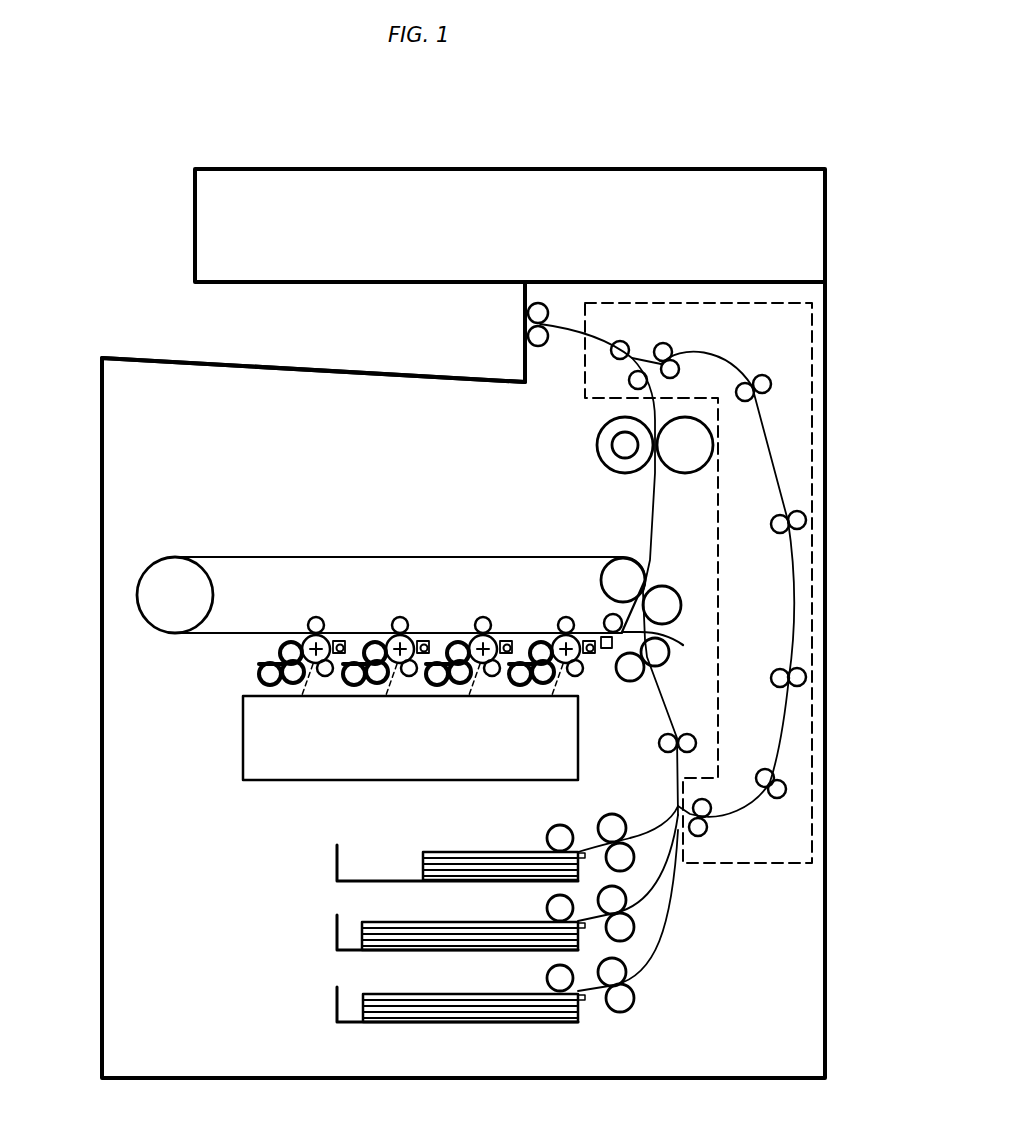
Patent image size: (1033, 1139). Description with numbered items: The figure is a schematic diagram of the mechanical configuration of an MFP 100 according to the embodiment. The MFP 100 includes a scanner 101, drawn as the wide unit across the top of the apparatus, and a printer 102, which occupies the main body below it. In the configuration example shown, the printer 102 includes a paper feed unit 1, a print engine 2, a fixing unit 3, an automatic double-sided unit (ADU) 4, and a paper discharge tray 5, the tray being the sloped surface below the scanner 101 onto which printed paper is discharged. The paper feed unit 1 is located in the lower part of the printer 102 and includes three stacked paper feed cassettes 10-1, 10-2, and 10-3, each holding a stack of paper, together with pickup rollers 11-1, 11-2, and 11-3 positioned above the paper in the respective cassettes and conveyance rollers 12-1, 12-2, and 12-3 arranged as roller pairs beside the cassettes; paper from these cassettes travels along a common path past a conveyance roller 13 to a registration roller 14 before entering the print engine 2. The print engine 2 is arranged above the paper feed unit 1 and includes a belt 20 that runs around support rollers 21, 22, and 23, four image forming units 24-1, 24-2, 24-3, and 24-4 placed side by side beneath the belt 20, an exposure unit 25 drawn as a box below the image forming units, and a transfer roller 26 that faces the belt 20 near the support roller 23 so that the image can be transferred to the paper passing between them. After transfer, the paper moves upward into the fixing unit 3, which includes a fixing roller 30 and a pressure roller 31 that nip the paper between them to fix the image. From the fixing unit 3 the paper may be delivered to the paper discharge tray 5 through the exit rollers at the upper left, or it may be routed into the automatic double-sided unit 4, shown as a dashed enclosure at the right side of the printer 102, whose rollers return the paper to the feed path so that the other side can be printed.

The MFP 100 is at (598, 140).
The scanner 101 is at (195, 226).
The printer 102 is at (102, 490).
The paper discharge tray 5 is at (318, 368).
The automatic double-sided unit (ADU) 4 is at (812, 380).
The fixing unit 3 is at (615, 462).
The fixing roller 30 is at (626, 466).
The pressure roller 31 is at (686, 466).
The print engine 2 is at (298, 512).
The belt 20 is at (439, 556).
The support roller 21 is at (175, 622).
The support roller 23 is at (626, 570).
The transfer roller 26 is at (665, 598).
The support roller 22 is at (657, 639).
The registration roller 14 is at (631, 681).
The conveyance roller 13 is at (681, 732).
The image forming unit 24-1 is at (552, 620).
The image forming unit 24-2 is at (469, 618).
The image forming unit 24-3 is at (380, 622).
The image forming unit 24-4 is at (299, 618).
The exposure unit 25 is at (243, 740).
The paper feed unit 1 is at (212, 932).
The paper feed cassette 10-1 is at (337, 860).
The paper feed cassette 10-2 is at (337, 930).
The paper feed cassette 10-3 is at (337, 1000).
The pickup roller 11-1 is at (548, 834).
The pickup roller 11-2 is at (548, 906).
The pickup roller 11-3 is at (548, 978).
The conveyance roller 12-1 is at (625, 838).
The conveyance roller 12-2 is at (633, 923).
The conveyance roller 12-3 is at (635, 998).